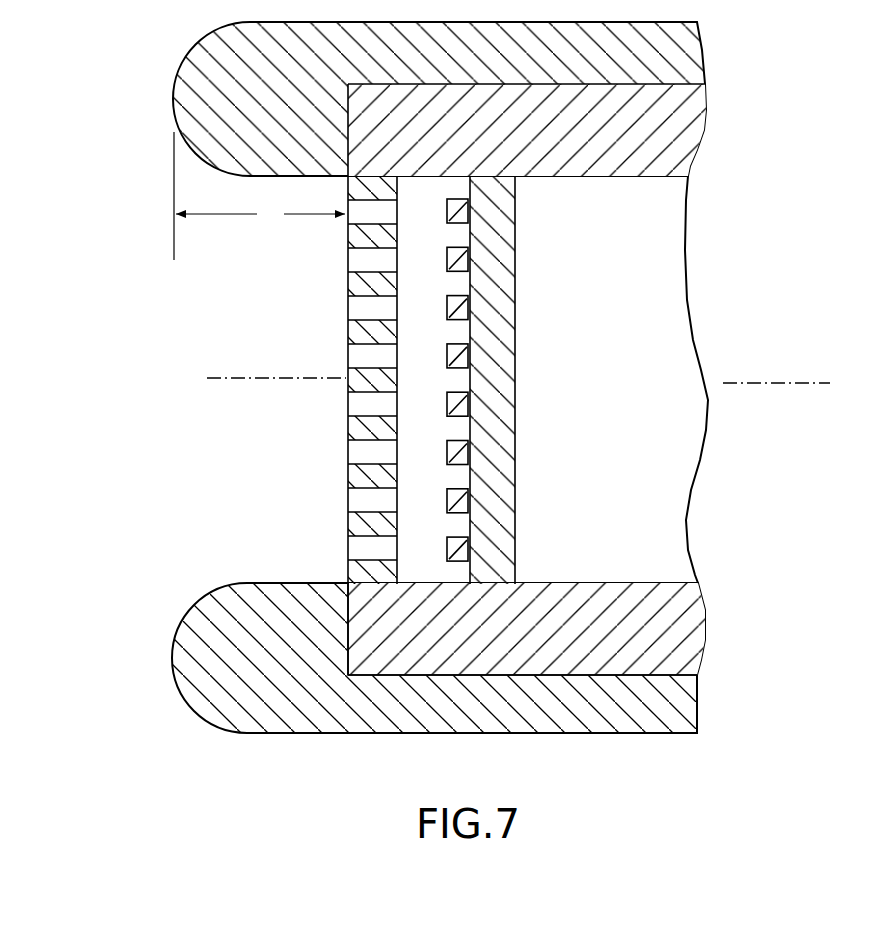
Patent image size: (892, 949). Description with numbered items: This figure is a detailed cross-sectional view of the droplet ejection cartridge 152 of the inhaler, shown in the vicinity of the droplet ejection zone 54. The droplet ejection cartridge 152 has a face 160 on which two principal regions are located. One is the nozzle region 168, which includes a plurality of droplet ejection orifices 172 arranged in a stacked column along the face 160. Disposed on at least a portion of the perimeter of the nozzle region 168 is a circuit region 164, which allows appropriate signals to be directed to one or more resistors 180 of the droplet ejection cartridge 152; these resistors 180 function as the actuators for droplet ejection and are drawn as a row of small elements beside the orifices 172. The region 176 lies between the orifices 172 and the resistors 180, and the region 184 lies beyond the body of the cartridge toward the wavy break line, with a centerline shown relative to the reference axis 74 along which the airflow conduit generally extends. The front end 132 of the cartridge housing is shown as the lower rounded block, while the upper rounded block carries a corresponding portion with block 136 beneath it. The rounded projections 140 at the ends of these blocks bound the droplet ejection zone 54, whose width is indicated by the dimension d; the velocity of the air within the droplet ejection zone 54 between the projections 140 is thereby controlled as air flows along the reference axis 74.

The droplet ejection zone 54 is at (254, 256).
The reference axis 74 is at (767, 383).
The front end 132 is at (176, 680).
The lower inner block 136 is at (346, 581).
The projections 140 is at (173, 91).
The droplet ejection cartridge 152 is at (706, 127).
The face 160 is at (347, 650).
The circuit region 164 is at (343, 607).
The nozzle region 168 is at (347, 373).
The droplet ejection orifices 172 is at (347, 306).
The channel 176 is at (436, 501).
The resistors 180 is at (448, 252).
The chamber 184 is at (614, 313).